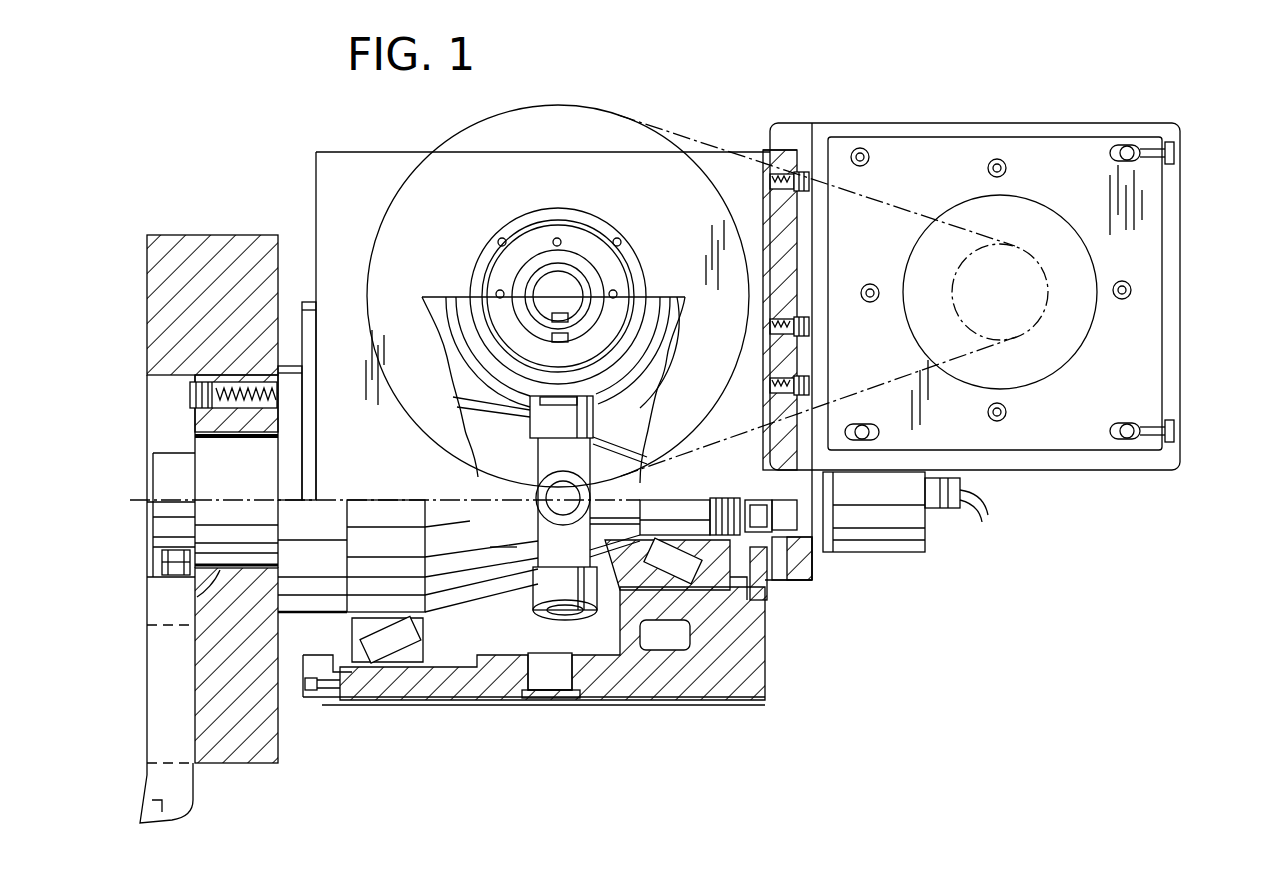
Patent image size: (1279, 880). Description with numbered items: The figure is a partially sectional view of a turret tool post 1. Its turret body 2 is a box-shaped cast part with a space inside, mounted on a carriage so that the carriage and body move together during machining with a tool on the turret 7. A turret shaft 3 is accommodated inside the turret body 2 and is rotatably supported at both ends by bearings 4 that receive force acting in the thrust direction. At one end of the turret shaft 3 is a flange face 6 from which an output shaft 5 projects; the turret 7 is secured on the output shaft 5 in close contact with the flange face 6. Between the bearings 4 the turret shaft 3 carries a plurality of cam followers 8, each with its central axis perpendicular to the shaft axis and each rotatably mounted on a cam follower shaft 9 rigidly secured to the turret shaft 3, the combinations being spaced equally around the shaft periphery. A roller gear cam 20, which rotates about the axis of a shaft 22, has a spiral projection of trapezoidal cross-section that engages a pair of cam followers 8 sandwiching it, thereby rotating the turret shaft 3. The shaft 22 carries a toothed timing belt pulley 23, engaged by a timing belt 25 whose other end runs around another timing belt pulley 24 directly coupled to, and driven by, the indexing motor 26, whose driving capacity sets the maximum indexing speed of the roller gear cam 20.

The turret tool post 1 is at (848, 123).
The turret body 2 is at (765, 630).
The turret shaft 3 is at (462, 592).
The bearings 4 is at (392, 675).
The output shaft 5 is at (195, 600).
The flange face 6 is at (268, 645).
The turret 7 is at (250, 742).
The cam follower 8 is at (613, 593).
The cam follower shaft 9 is at (570, 612).
The roller gear cam 20 is at (636, 347).
The shaft 22 is at (572, 288).
The timing belt pulley 23 is at (640, 113).
The timing belt pulley 24 is at (1013, 312).
The timing belt 25 is at (742, 148).
The indexing motor 26 is at (1145, 200).